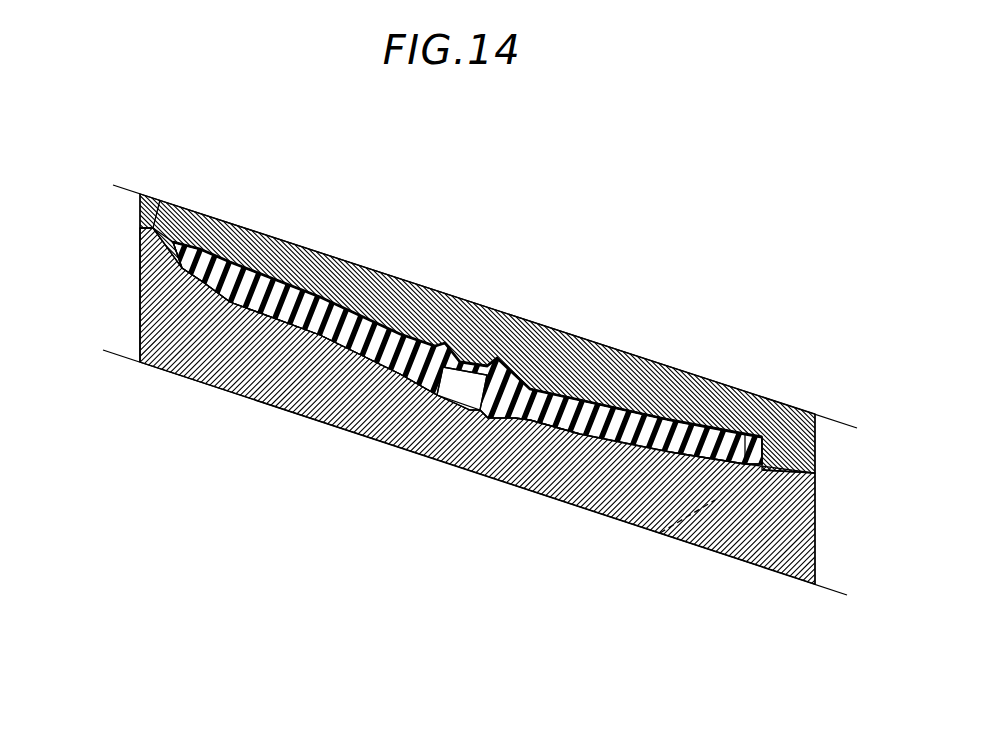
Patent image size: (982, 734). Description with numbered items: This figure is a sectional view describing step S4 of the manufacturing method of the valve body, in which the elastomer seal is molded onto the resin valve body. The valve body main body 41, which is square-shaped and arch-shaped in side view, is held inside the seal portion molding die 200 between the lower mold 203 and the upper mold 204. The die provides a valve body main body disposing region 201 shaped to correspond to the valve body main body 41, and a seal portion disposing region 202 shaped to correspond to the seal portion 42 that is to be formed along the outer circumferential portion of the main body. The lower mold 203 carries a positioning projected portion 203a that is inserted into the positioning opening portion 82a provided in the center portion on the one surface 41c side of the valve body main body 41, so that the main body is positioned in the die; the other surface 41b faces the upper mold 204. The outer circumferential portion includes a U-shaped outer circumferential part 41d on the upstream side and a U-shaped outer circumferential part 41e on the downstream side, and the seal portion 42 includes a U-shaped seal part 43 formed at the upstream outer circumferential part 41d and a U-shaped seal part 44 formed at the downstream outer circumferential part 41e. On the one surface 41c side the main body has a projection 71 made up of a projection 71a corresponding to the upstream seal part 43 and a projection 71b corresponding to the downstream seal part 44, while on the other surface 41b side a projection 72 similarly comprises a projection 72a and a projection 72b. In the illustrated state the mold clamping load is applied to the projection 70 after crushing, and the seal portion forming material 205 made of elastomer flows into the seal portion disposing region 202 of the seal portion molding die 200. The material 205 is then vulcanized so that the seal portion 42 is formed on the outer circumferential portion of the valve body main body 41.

The seal portion molding die 200 is at (437, 400).
The valve body main body disposing region 201 is at (565, 500).
The seal portion disposing region 202 is at (176, 234).
The lower mold 203 is at (360, 405).
The positioning projected portion 203a is at (472, 412).
The upper mold 204 is at (412, 300).
The seal portion forming material 205 is at (160, 297).
The valve body main body 41 is at (452, 305).
The other surface 41b is at (300, 295).
The one surface 41c is at (312, 402).
The outer circumferential part 41d is at (165, 250).
The outer circumferential part 41e is at (750, 475).
The seal portion 42 is at (489, 397).
The seal part 43 is at (152, 232).
The seal part 44 is at (787, 475).
The projection 70 is at (486, 397).
The projection 71 is at (451, 453).
The projection 71a is at (197, 282).
The projection 71b is at (655, 535).
The projection 72 is at (494, 310).
The projection 72a is at (200, 236).
The projection 72b is at (747, 430).
The positioning opening portion 82a is at (442, 398).
The step S4 is at (452, 167).